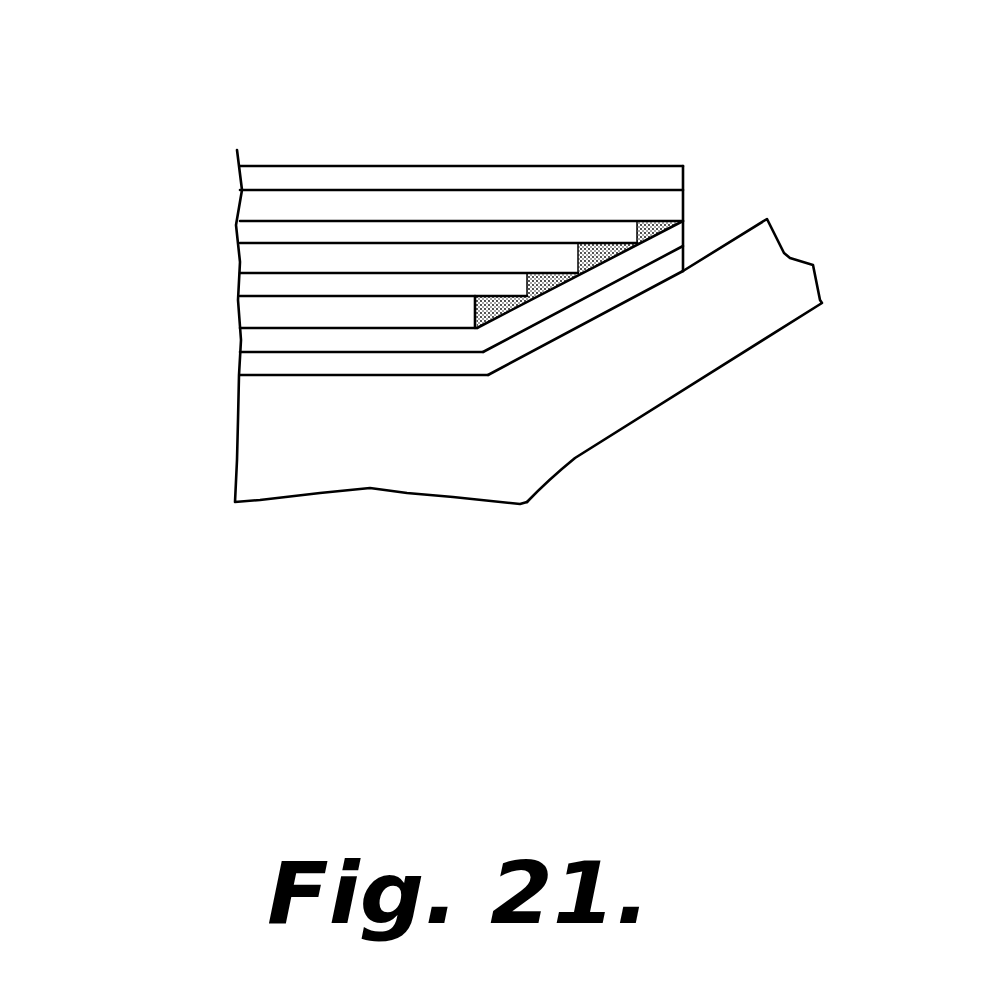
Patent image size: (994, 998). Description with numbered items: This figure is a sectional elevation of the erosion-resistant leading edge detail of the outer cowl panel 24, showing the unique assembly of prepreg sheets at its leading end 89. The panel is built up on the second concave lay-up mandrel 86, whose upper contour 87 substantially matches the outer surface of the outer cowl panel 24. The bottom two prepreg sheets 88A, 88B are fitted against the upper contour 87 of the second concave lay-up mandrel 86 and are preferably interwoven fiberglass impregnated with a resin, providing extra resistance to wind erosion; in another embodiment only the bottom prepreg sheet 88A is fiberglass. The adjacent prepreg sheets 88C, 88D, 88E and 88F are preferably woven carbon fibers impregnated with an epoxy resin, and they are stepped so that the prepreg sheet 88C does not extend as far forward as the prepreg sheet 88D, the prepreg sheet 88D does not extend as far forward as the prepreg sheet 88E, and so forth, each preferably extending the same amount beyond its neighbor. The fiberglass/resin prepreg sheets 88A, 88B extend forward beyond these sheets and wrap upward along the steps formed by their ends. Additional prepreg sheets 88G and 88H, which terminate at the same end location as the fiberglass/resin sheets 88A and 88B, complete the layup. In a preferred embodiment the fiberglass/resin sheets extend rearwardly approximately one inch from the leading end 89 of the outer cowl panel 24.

The outer cowl panel 24 is at (473, 260).
The second concave lay-up mandrel 86 is at (775, 315).
The upper contour 87 is at (598, 320).
The bottom prepreg sheet 88A is at (252, 370).
The bottom prepreg sheet 88B is at (252, 340).
The prepreg sheet 88C is at (252, 315).
The prepreg sheet 88D is at (250, 293).
The prepreg sheet 88E is at (252, 262).
The prepreg sheet 88F is at (250, 236).
The additional prepreg sheet 88G is at (252, 205).
The additional prepreg sheet 88H is at (433, 173).
The leading end 89 is at (438, 262).